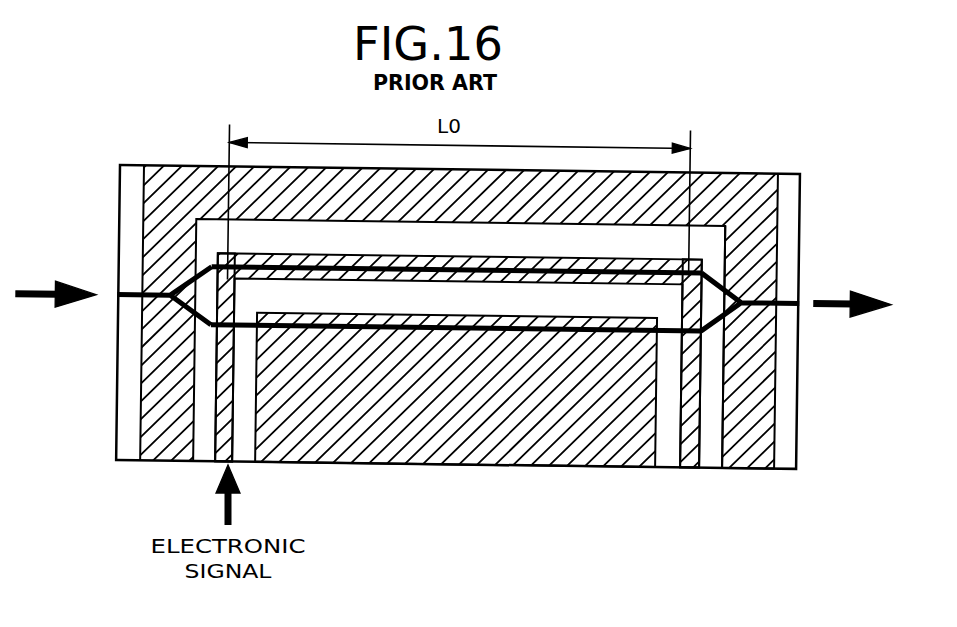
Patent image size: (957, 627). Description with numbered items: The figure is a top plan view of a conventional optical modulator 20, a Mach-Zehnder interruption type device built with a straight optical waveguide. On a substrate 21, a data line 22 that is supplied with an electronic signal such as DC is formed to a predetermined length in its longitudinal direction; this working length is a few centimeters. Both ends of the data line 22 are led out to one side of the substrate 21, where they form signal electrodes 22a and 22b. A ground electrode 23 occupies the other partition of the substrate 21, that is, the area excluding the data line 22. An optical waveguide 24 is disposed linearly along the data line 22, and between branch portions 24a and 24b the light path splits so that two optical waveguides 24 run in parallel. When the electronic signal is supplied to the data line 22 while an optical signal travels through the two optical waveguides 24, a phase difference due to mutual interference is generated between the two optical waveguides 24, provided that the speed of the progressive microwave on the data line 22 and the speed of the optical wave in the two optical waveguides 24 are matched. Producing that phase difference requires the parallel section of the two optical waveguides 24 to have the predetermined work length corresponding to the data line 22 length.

The optical modulator 20 is at (725, 112).
The substrate 21 is at (736, 174).
The data line 22 is at (310, 280).
The signal electrode 22a is at (226, 441).
The signal electrode 22b is at (686, 448).
The ground electrode 23 is at (631, 447).
The optical waveguide 24 is at (423, 273).
The branch portion 24a is at (182, 277).
The branch portion 24b is at (738, 282).